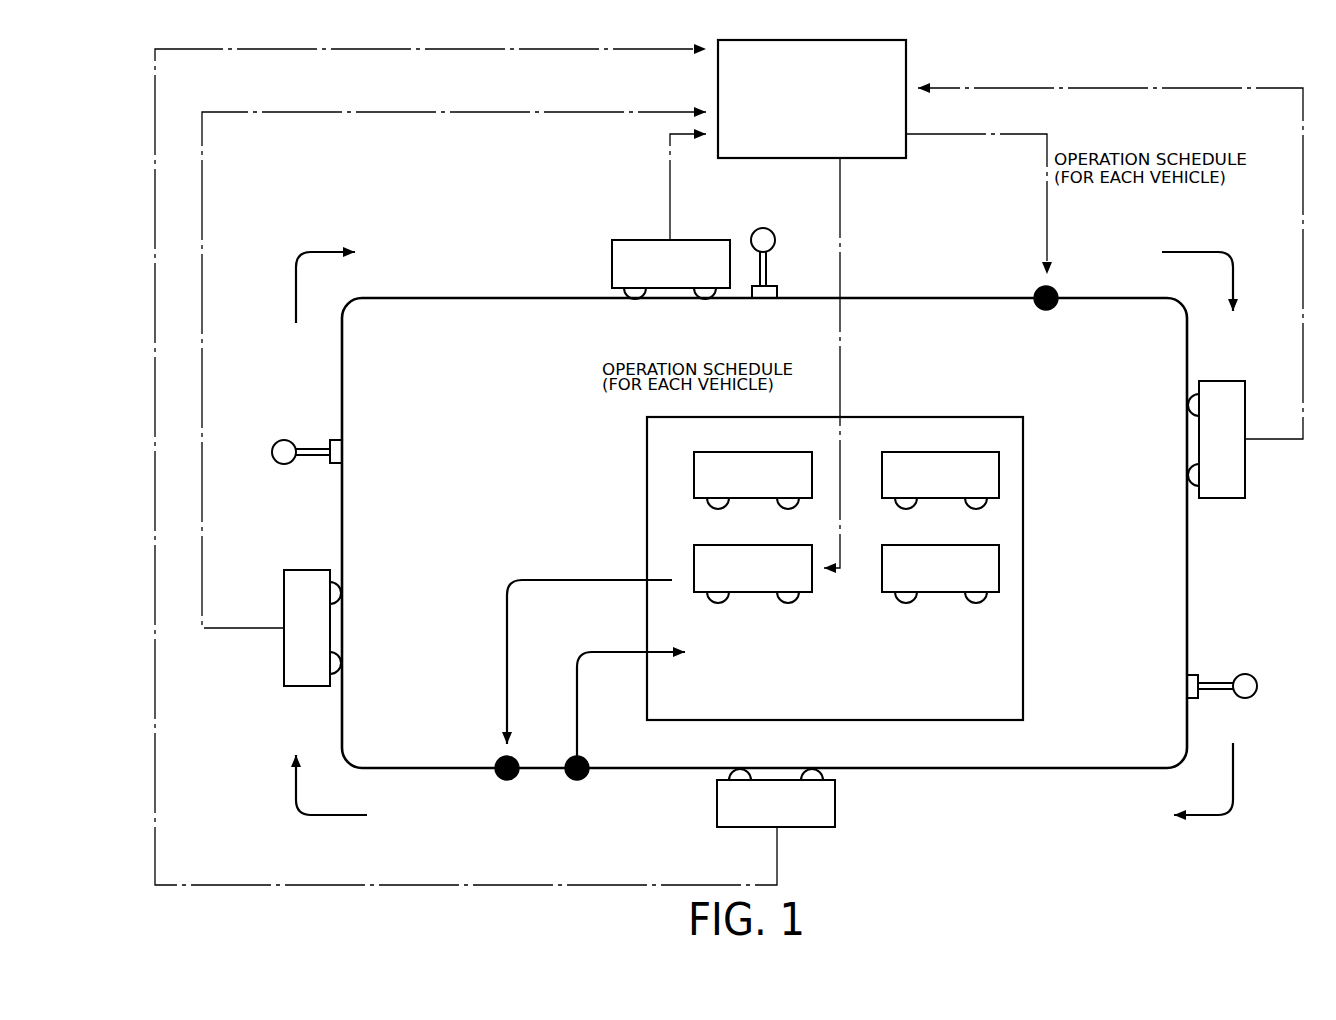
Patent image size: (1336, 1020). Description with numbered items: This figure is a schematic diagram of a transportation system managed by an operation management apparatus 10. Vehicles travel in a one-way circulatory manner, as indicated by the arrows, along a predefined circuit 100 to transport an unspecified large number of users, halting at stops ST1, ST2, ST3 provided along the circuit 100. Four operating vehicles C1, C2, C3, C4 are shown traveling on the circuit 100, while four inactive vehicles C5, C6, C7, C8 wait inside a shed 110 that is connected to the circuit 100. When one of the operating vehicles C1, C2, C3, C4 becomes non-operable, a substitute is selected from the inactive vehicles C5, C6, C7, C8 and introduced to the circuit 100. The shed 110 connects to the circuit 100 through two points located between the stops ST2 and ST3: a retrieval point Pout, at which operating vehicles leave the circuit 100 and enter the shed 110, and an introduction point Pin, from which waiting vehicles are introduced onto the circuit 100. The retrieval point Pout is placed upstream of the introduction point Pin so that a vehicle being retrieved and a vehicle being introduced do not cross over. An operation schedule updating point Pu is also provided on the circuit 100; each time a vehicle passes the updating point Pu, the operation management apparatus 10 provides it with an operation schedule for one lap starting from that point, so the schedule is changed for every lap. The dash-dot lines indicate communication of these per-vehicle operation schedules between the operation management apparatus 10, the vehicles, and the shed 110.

The operation management apparatus 10 is at (884, 40).
The circuit 100 is at (1185, 590).
The shed 110 is at (995, 682).
The operating vehicle C1 is at (671, 269).
The operating vehicle C2 is at (1216, 439).
The operating vehicle C3 is at (776, 798).
The operating vehicle C4 is at (312, 628).
The inactive vehicle C5 is at (753, 574).
The inactive vehicle C6 is at (940, 574).
The inactive vehicle C7 is at (753, 480).
The inactive vehicle C8 is at (940, 480).
The stop ST1 is at (778, 234).
The stop ST2 is at (1260, 686).
The stop ST3 is at (271, 455).
The operation schedule updating point Pu is at (1045, 313).
The introduction point Pin is at (581, 693).
The retrieval point Pout is at (625, 729).